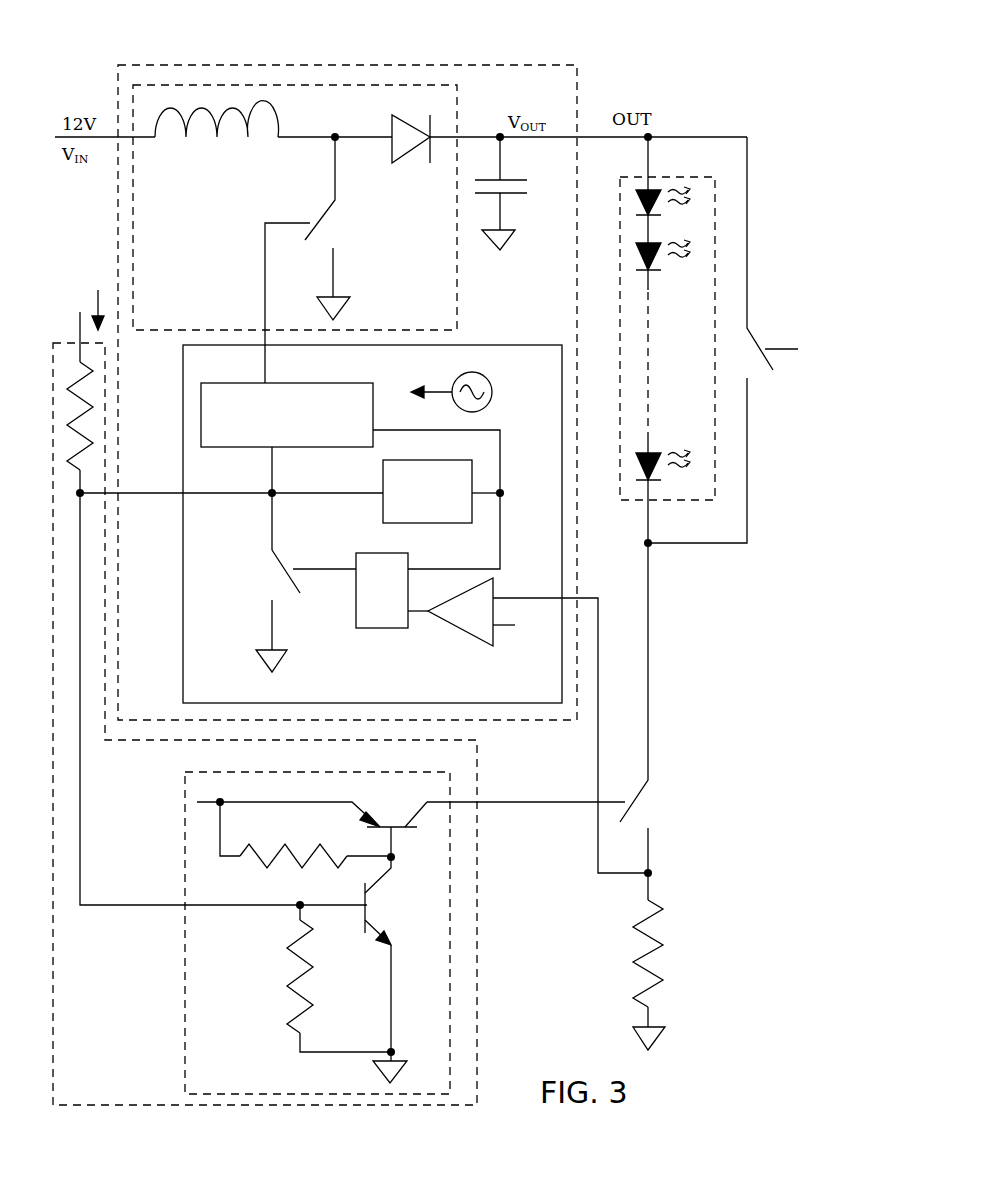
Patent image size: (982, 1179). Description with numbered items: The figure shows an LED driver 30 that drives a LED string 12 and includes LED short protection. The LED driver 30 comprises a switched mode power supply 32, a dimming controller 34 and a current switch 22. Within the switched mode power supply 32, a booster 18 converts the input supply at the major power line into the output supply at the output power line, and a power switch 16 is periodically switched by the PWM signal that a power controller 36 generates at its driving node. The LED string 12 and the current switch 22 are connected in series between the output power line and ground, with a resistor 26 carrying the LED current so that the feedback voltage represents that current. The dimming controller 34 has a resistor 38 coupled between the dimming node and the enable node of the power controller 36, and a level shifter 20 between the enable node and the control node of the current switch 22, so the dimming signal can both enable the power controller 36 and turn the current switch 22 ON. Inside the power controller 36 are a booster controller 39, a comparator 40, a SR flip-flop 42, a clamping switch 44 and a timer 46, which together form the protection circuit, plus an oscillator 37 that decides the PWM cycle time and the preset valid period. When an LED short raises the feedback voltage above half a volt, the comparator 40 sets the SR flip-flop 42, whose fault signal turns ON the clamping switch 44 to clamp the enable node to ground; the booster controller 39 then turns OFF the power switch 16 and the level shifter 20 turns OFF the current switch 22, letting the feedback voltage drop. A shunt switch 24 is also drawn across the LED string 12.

The LED string 12 is at (670, 172).
The power switch 16 is at (338, 220).
The booster 18 is at (408, 85).
The level shifter 20 is at (436, 1003).
The current switch 22 is at (656, 806).
The LED shunt switch 24 is at (758, 331).
The resistor 26 is at (660, 933).
The LED driver 30 is at (600, 97).
The switched mode power supply 32 is at (522, 64).
The dimming controller 34 is at (108, 1020).
The power controller 36 is at (545, 376).
The oscillator 37 is at (493, 397).
The resistor 38 is at (93, 397).
The booster controller 39 is at (286, 437).
The comparator 40 is at (457, 628).
The SR flip-flop 42 is at (371, 604).
The clamping switch 44 is at (262, 578).
The timer 46 is at (416, 515).